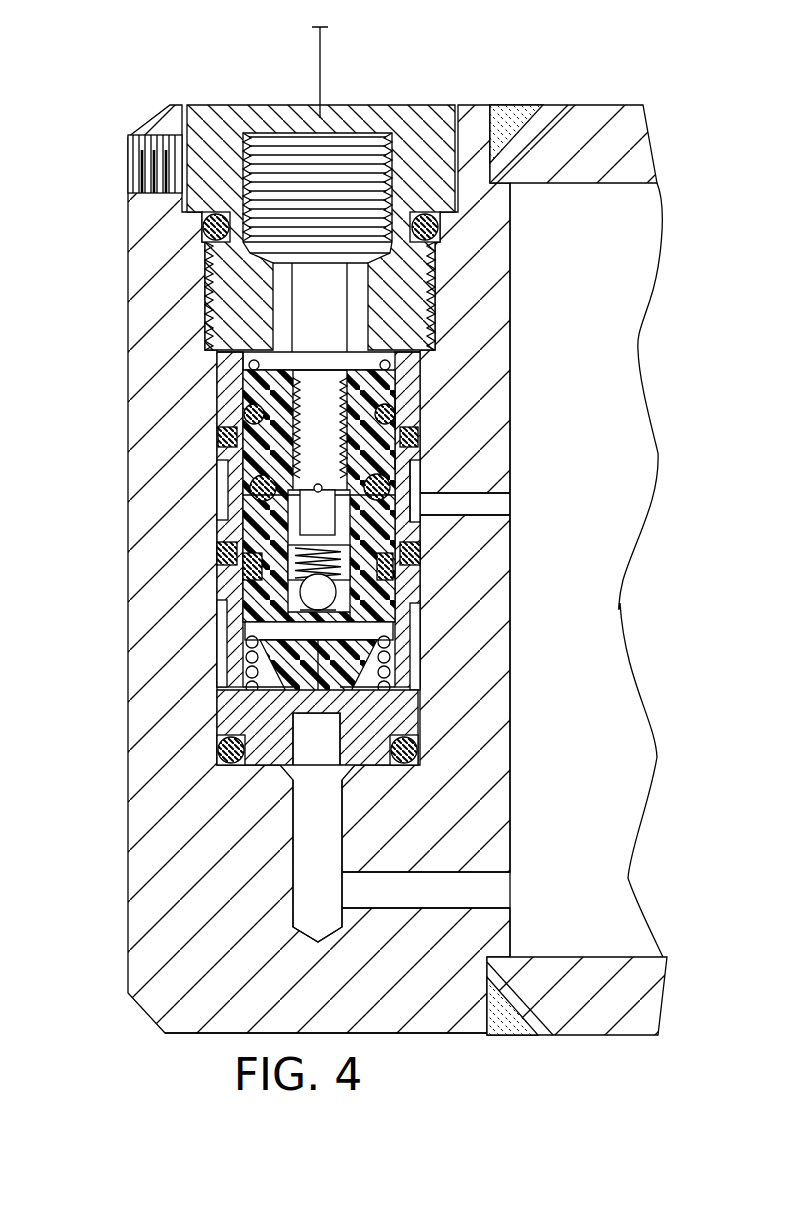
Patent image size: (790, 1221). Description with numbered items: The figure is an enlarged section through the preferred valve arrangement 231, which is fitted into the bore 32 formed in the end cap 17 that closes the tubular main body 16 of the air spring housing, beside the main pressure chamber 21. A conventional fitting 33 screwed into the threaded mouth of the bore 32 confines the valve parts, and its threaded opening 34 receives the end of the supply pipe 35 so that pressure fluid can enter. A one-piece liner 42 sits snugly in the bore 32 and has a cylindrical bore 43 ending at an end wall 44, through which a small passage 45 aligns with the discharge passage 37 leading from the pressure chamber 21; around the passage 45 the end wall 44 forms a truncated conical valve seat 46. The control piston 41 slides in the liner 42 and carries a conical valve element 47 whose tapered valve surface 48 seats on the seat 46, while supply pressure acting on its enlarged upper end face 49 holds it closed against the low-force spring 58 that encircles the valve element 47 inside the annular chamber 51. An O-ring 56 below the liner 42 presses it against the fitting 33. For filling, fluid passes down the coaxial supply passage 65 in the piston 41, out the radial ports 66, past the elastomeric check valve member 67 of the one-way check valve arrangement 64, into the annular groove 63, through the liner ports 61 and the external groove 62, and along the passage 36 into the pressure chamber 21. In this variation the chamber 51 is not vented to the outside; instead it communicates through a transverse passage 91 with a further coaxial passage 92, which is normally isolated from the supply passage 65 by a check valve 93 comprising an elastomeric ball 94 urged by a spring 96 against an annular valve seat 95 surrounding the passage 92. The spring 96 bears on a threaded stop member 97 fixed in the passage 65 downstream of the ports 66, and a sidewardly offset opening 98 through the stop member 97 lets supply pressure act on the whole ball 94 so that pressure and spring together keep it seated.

The main body 16 is at (645, 1000).
The end cap 17 is at (158, 942).
The main pressure chamber 21 is at (642, 221).
The bore 32 is at (415, 412).
The fitting 33 is at (420, 115).
The threaded opening 34 is at (290, 160).
The supply pipe 35 is at (322, 73).
The passage 36 is at (493, 513).
The passage 37 is at (478, 907).
The control piston 41 is at (413, 603).
The liner 42 is at (380, 608).
The cylindrical bore 43 is at (395, 375).
The end wall 44 is at (247, 767).
The passage 45 is at (293, 770).
The valve seat 46 is at (223, 718).
The valve element 47 is at (370, 700).
The valve surface 48 is at (345, 693).
The upper end face 49 is at (248, 352).
The annular chamber 51 is at (263, 690).
The O-ring 56 is at (222, 756).
The spring 58 is at (257, 637).
The ports 61 is at (233, 480).
The annular groove 62 is at (222, 507).
The annular groove 63 is at (395, 463).
The check valve arrangement 64 is at (233, 468).
The passage 65 is at (262, 400).
The ports 66 is at (300, 490).
The check valve member 67 is at (250, 495).
The passage 91 is at (380, 622).
The further passage 92 is at (316, 739).
The check valve 93 is at (385, 532).
The ball 94 is at (403, 592).
The valve seat 95 is at (240, 592).
The spring 96 is at (217, 538).
The stop member 97 is at (418, 523).
The opening 98 is at (225, 527).
The valve arrangement 231 is at (218, 573).